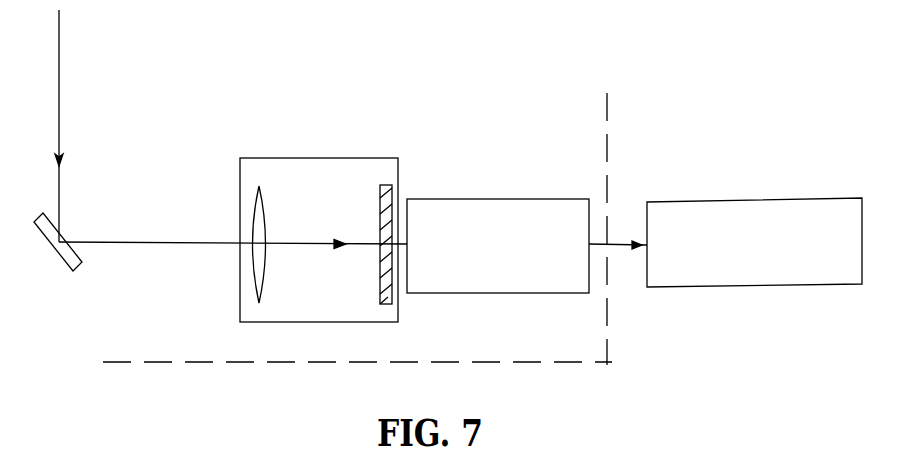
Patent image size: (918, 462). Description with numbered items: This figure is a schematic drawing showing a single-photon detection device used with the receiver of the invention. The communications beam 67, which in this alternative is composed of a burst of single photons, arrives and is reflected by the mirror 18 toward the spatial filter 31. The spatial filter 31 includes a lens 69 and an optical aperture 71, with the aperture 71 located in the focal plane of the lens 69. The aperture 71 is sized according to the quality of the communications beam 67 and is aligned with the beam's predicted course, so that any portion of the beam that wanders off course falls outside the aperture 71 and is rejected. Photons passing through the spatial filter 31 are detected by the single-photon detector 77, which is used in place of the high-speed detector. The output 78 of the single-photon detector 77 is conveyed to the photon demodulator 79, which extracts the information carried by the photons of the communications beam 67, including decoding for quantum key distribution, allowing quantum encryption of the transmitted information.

The communications beam 67 is at (62, 52).
The mirror 18 is at (58, 256).
The spatial filter 31 is at (327, 158).
The lens 69 is at (253, 288).
The optical aperture 71 is at (380, 250).
The single-photon detector 77 is at (503, 199).
The output 78 is at (623, 245).
The photon demodulator 79 is at (735, 200).